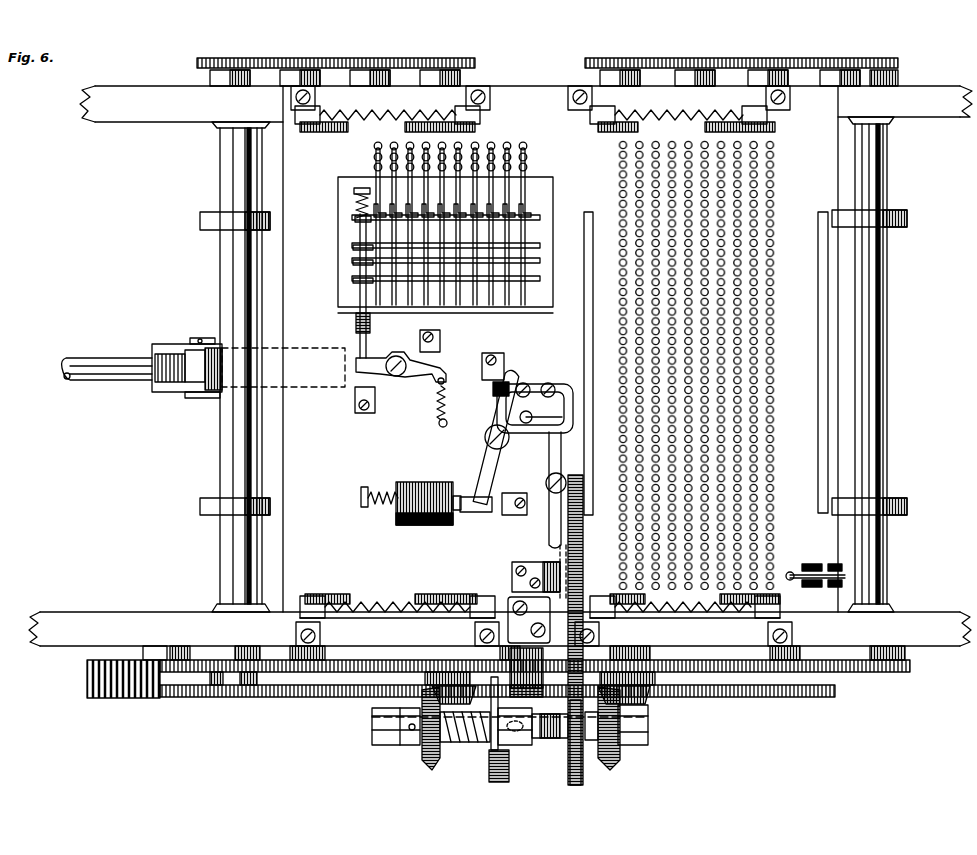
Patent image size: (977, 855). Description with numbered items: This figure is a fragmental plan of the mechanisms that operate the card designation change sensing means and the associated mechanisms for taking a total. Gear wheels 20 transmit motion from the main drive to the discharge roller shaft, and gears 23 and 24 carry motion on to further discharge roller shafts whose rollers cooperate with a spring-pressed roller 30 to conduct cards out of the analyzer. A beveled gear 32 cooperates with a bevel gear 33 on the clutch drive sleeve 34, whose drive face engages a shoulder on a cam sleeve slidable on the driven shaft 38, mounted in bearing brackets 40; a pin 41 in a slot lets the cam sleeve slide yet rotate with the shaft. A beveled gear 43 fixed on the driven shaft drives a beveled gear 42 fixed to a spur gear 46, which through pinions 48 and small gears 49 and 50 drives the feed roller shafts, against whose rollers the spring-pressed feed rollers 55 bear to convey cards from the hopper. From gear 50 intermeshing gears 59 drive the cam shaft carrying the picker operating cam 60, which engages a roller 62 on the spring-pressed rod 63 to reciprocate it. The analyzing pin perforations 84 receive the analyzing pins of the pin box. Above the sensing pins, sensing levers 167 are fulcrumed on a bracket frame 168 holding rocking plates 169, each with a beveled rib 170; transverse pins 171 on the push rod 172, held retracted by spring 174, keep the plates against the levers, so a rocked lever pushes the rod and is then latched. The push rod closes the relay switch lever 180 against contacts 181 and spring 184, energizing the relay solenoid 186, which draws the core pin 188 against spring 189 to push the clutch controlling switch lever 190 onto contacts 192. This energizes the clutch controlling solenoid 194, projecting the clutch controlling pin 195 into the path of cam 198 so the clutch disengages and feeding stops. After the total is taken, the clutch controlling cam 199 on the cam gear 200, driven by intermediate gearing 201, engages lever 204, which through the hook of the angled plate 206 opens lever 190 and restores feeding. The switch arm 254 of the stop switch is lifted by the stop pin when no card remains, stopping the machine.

The gear wheels 20 is at (782, 698).
The gear 23 is at (690, 655).
The gear 24 is at (656, 650).
The spring-pressed roller 30 is at (712, 596).
The beveled gear 32 is at (650, 726).
The bevel gear 33 is at (614, 766).
The clutch drive sleeve 34 is at (576, 768).
The driven shaft 38 is at (479, 746).
The bearing brackets 40 is at (388, 748).
The pin 41 is at (526, 748).
The beveled gear 42 is at (436, 692).
The beveled gear 43 is at (432, 772).
The spur gear 46 is at (440, 662).
The pinions 48 is at (276, 658).
The small gear 49 is at (342, 656).
The small gear 50 is at (236, 656).
The feed rollers 55 is at (440, 598).
The intermeshing gears 59 is at (242, 698).
The picker operating cam 60 is at (272, 360).
The roller 62 is at (184, 348).
The rod 63 is at (104, 356).
The analyzing pin perforations 84 is at (772, 366).
The sensing levers 167 is at (510, 183).
The bracket frame 168 is at (540, 217).
The rocking plates 169 is at (466, 283).
The beveled rib 170 is at (540, 278).
The transverse pins 171 is at (352, 263).
The push rod 172 is at (358, 236).
The spring 174 is at (356, 206).
The relay switch lever 180 is at (410, 380).
The contacts 181 is at (420, 340).
The spring 184 is at (436, 412).
The relay solenoid 186 is at (418, 526).
The core pin 188 is at (383, 513).
The spring 189 is at (380, 490).
The clutch controlling switch lever 190 is at (480, 506).
The contacts 192 is at (506, 364).
The clutch controlling solenoid 194 is at (522, 650).
The clutch controlling pin 195 is at (504, 677).
The cam 198 is at (497, 785).
The clutch controlling cam 199 is at (545, 563).
The cam gear 200 is at (583, 548).
The intermediate gearing 201 is at (604, 656).
The lever 204 is at (550, 522).
The angled plate 206 is at (573, 405).
The switch arm 254 is at (794, 572).